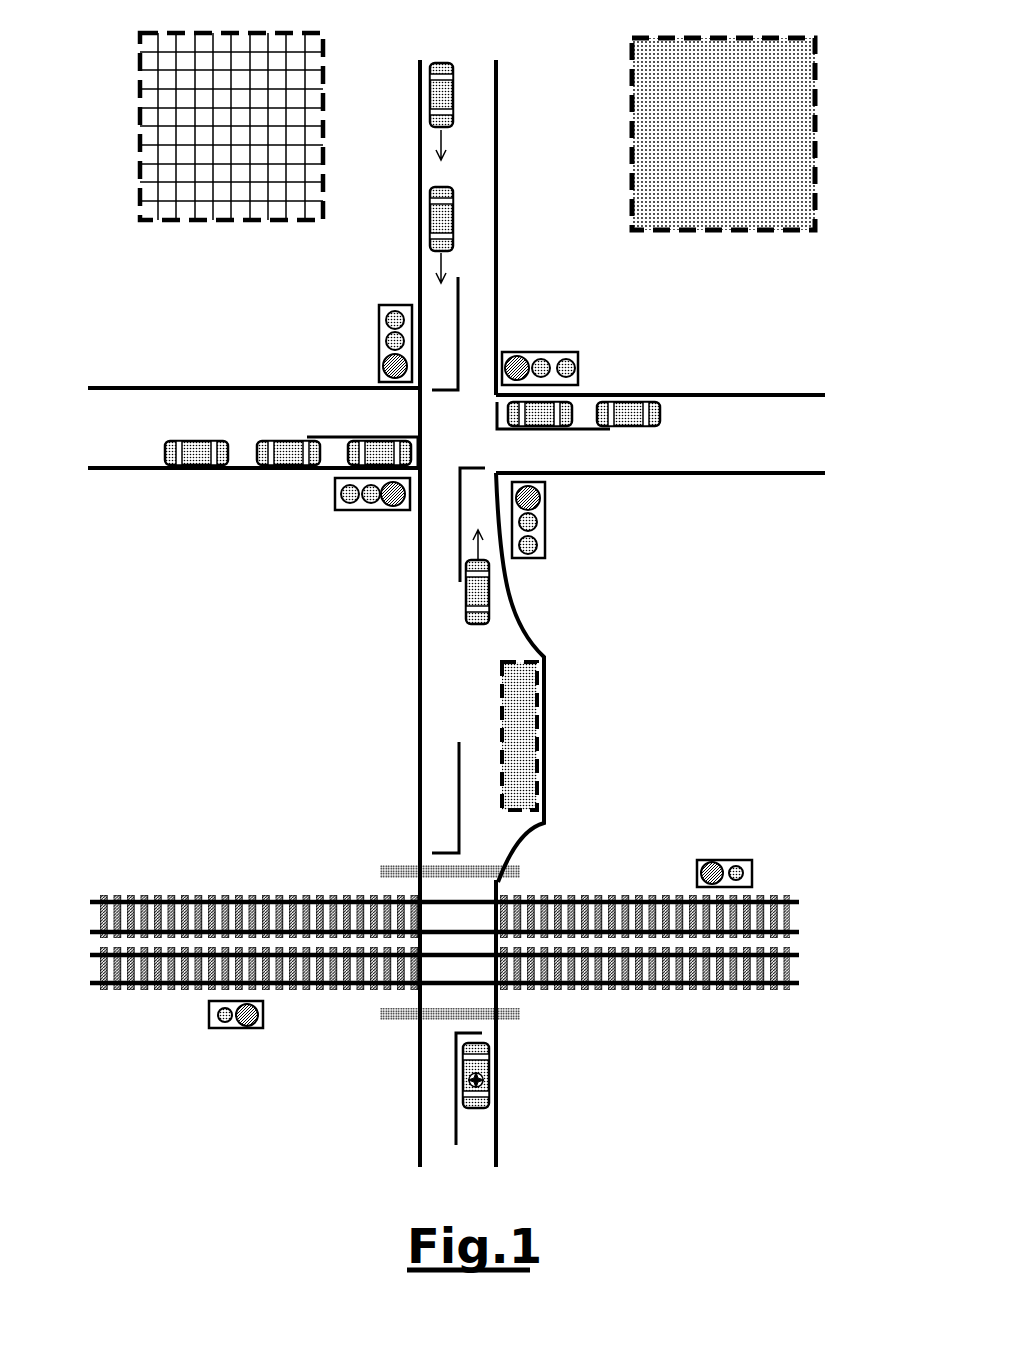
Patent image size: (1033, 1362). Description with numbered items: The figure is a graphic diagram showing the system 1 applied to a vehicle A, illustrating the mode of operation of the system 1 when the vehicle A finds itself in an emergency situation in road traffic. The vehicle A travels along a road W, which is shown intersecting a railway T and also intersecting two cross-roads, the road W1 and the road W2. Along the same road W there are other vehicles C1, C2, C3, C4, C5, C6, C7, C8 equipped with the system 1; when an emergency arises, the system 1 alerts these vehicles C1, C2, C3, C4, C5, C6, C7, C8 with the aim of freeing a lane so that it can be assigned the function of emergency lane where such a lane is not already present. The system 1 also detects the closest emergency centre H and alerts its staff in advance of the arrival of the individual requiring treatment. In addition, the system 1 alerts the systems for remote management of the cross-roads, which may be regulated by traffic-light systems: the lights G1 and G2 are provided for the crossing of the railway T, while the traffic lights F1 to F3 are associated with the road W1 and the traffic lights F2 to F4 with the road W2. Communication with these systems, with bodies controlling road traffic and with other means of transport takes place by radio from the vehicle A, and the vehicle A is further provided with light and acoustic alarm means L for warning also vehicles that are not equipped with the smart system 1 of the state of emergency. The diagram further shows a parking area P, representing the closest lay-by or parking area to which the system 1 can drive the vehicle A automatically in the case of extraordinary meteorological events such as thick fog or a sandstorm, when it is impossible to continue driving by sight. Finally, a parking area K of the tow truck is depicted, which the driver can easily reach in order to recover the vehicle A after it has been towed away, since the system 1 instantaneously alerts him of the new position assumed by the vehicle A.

The system 1 is at (595, 1125).
The road W is at (418, 1122).
The road W1 is at (733, 473).
The road W2 is at (108, 470).
The parking area of the tow truck K is at (142, 148).
The emergency centre H is at (645, 152).
The vehicle C1 is at (467, 593).
The vehicle C2 is at (460, 217).
The vehicle C3 is at (445, 92).
The vehicle C4 is at (190, 452).
The vehicle C5 is at (285, 452).
The vehicle C6 is at (378, 452).
The vehicle C7 is at (545, 415).
The vehicle C8 is at (648, 410).
The traffic light F1 is at (538, 522).
The traffic light F2 is at (578, 365).
The traffic light F3 is at (379, 333).
The traffic light F4 is at (340, 510).
The parking area P is at (522, 770).
The railway T is at (205, 978).
The light G1 is at (248, 1028).
The light G2 is at (752, 868).
The vehicle A is at (485, 1047).
The light/acoustic alarm means L is at (482, 1080).